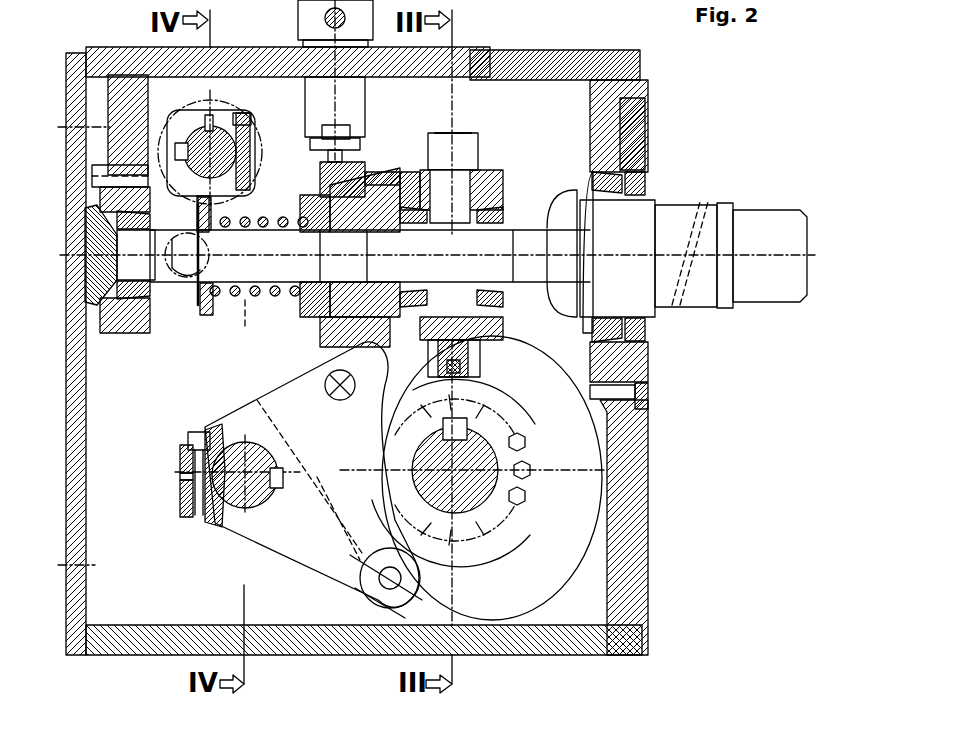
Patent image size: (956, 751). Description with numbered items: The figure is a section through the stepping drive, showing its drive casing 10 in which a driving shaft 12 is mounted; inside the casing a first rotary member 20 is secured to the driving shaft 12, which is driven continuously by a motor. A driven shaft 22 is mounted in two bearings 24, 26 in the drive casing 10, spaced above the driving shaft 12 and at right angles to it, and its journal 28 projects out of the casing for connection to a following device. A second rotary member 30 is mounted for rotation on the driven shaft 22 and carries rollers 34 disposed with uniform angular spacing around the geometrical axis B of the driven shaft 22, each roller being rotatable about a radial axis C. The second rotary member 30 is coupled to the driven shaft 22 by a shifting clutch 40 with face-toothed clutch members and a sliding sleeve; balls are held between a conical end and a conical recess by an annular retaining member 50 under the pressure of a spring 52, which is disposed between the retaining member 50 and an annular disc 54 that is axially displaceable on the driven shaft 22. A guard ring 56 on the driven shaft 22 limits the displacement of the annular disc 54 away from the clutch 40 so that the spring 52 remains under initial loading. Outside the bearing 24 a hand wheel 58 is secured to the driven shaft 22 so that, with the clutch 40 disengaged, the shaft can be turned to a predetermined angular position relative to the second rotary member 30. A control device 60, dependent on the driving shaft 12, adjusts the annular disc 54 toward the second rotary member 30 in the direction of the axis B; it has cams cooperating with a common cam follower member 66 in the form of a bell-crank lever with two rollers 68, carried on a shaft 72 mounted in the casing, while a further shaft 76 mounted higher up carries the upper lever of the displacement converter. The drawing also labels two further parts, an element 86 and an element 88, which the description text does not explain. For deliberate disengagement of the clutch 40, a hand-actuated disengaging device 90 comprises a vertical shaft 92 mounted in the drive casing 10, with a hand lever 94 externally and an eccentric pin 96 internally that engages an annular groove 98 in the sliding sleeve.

The drive casing 10 is at (642, 590).
The driving shaft 12 is at (468, 490).
The first rotary member 20 is at (550, 538).
The driven shaft 22 is at (562, 215).
The bearing 24 is at (140, 318).
The bearing 26 is at (590, 330).
The journal 28 is at (693, 274).
The second rotary member 30 is at (412, 140).
The rollers 34 is at (472, 140).
The shifting clutch 40 is at (350, 184).
The annular retaining member 50 is at (340, 271).
The spring 52 is at (274, 303).
The annular disc 54 is at (211, 271).
The guard ring 56 is at (187, 246).
The hand wheel 58 is at (96, 284).
The control device 60 is at (203, 422).
The cam follower member 66 is at (238, 425).
The rollers 68 is at (452, 472).
The shaft 72 is at (225, 495).
The shaft 76 is at (250, 140).
The eccentric block 86 is at (183, 125).
The shaft 88 is at (188, 273).
The disengaging device 90 is at (367, 111).
The vertical shaft 92 is at (305, 95).
The hand lever 94 is at (300, 17).
The eccentric pin 96 is at (322, 166).
The annular groove 98 is at (345, 349).
The geometrical axis B is at (776, 255).
The radial axis C is at (455, 105).